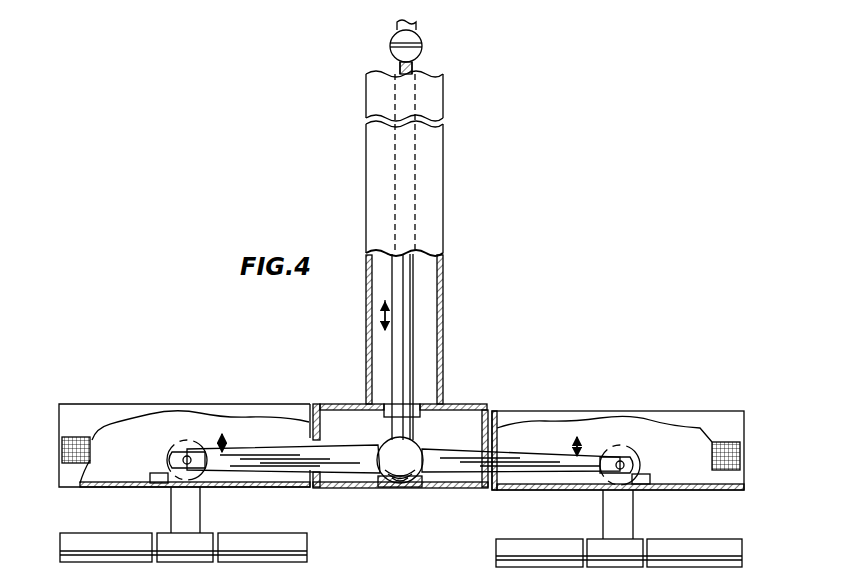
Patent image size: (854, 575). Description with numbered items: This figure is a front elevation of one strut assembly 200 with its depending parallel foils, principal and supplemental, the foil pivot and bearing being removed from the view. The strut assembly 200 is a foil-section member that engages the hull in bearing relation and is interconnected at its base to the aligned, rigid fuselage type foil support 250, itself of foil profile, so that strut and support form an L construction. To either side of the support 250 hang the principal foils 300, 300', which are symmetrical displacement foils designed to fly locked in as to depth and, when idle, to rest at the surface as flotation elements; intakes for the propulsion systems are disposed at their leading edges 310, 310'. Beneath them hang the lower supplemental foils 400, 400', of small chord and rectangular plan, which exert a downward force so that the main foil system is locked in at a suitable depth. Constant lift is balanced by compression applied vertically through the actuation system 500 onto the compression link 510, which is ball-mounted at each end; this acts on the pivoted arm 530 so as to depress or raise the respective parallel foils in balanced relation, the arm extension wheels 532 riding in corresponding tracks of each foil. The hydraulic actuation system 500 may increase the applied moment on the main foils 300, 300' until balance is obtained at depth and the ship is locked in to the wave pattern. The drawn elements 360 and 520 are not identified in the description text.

The strut assembly 200 is at (444, 207).
The fuselage type foil support 250 is at (342, 395).
The principal foil 300 is at (618, 433).
The principal foil 300' is at (184, 432).
The leading edge 310 is at (751, 456).
The leading edge 310' is at (51, 448).
The support block 360 is at (156, 474).
The lower supplemental foil 400 is at (624, 528).
The lower supplemental foil 400' is at (183, 524).
The actuation system 500 is at (414, 298).
The compression link 510 is at (421, 52).
The central drum 520 is at (409, 453).
The pivoted arm 530 is at (243, 455).
The arm extension wheel 532 is at (175, 452).